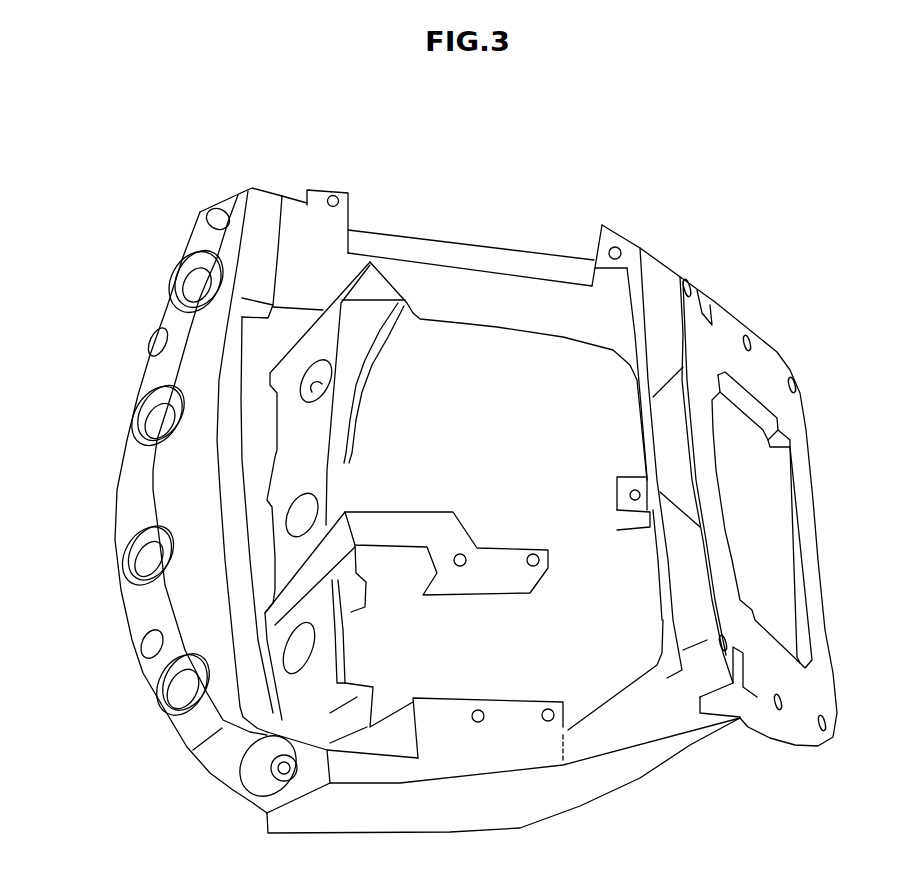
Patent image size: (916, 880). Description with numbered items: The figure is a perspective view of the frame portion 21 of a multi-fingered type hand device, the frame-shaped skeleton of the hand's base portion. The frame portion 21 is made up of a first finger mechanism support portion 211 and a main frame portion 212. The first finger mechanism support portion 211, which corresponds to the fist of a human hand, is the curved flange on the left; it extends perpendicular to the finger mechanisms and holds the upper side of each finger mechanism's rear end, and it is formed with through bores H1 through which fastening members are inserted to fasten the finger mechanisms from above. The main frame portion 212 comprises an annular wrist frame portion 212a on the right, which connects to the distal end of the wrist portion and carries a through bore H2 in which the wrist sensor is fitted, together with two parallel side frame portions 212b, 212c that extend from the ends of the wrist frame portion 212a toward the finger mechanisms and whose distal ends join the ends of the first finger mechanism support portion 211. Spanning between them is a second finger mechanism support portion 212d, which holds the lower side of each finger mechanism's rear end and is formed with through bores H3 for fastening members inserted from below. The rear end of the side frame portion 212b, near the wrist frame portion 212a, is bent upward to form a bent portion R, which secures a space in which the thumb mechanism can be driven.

The frame portion 21 is at (151, 171).
The first finger mechanism support portion 211 is at (133, 476).
The main frame portion 212 is at (450, 196).
The wrist frame portion 212a is at (762, 368).
The side frame portion 212b is at (580, 782).
The side frame portion 212c is at (527, 258).
The second finger mechanism support portion 212d is at (330, 462).
The through bore H1 is at (197, 290).
The through bore H2 is at (770, 492).
The through bore H3 is at (302, 395).
The bent portion R is at (748, 750).